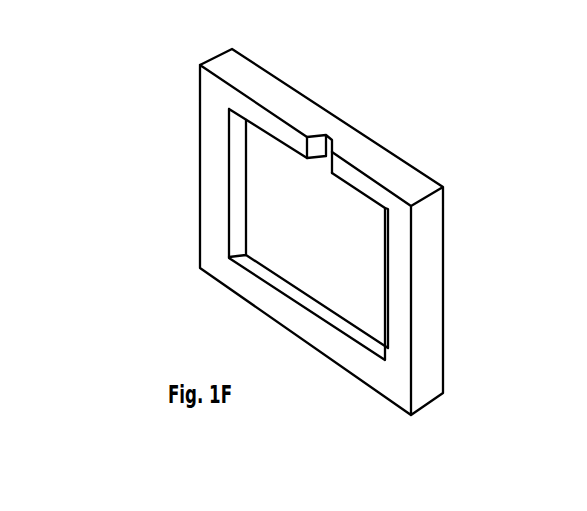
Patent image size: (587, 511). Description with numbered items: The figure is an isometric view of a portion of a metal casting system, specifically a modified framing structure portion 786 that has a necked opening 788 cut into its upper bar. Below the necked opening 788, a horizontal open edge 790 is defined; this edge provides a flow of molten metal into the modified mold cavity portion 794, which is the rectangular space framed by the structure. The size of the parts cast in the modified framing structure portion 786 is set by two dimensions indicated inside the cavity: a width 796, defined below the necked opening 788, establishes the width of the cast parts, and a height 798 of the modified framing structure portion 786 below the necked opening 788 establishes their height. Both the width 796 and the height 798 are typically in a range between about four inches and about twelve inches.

The modified framing structure portion 786 is at (200, 110).
The necked opening 788 is at (333, 152).
The horizontal open edge 790 is at (238, 137).
The modified mold cavity portion 794 is at (263, 247).
The width 796 is at (386, 256).
The height 798 is at (360, 193).